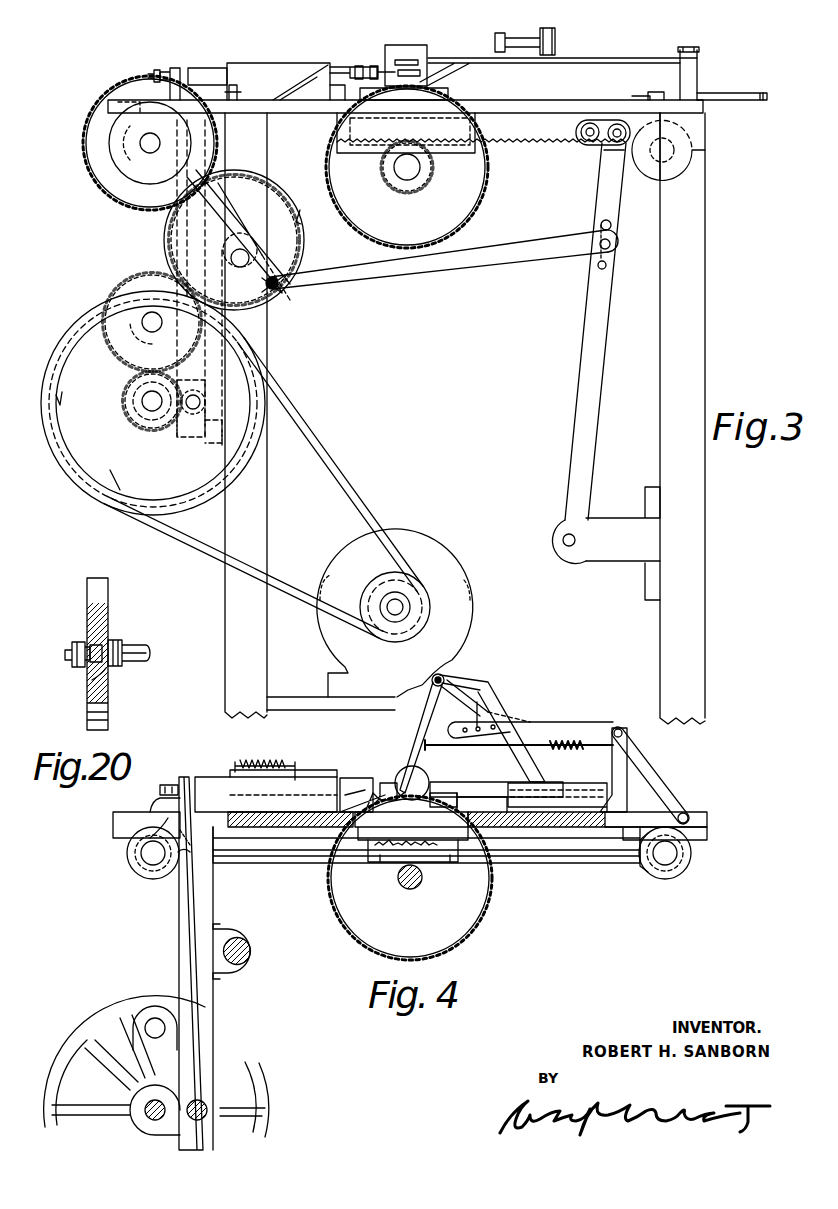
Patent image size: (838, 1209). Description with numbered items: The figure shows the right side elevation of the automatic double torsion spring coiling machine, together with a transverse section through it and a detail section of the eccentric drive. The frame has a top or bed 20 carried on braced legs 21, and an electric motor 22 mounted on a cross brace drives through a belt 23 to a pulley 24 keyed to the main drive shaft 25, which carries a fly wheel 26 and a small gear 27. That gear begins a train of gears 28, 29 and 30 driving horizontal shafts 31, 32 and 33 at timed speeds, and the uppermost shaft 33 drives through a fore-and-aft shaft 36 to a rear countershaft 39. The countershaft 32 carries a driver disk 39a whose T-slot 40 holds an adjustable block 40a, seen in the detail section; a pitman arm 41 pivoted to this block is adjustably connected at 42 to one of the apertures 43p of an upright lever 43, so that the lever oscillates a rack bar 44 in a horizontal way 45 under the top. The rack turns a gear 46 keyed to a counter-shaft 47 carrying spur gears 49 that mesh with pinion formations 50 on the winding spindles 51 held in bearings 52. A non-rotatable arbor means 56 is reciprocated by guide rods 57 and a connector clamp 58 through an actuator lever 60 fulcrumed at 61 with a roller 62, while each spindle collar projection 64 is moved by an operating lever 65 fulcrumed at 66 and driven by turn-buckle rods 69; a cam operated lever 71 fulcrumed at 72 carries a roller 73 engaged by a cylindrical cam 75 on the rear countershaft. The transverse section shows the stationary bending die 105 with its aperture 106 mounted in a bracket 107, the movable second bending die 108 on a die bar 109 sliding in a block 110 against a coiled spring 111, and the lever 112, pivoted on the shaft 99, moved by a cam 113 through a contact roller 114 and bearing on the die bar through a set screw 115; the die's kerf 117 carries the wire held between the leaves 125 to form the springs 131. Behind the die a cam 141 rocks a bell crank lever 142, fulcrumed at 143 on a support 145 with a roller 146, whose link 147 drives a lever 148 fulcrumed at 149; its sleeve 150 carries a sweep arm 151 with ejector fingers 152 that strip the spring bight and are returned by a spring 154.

In FIG. 3, the top or bed 20 is at (704, 112).
In FIG. 4, the top or bed 20 is at (708, 812).
In FIG. 3, the legs 21 is at (706, 282).
In FIG. 4, the legs 21 is at (209, 889).
In FIG. 3, the electric motor 22 is at (474, 606).
In FIG. 3, the belt 23 is at (200, 560).
In FIG. 3, the pulley 24 is at (120, 507).
In FIG. 3, the main drive shaft 25 is at (145, 408).
In FIG. 4, the main drive shaft 25 is at (140, 1118).
In FIG. 3, the fly wheel 26 is at (153, 403).
In FIG. 4, the fly wheel 26 is at (82, 1030).
In FIG. 3, the small gear 27 is at (122, 392).
In FIG. 3, the gear 28 is at (110, 350).
In FIG. 3, the gear 29 is at (170, 222).
In FIG. 3, the gear 30 is at (100, 178).
In FIG. 3, the horizontal shaft 31 is at (142, 324).
In FIG. 4, the horizontal shaft 31 is at (155, 1018).
In FIG. 3, the countershaft 32 is at (242, 262).
In FIG. 20, the countershaft 32 is at (143, 645).
In FIG. 4, the countershaft 32 is at (250, 964).
In FIG. 3, the uppermost shaft 33 is at (140, 143).
In FIG. 4, the uppermost shaft 33 is at (148, 855).
In FIG. 4, the horizontal shaft 36 is at (275, 864).
In FIG. 3, the countershaft 39 is at (656, 162).
In FIG. 4, the countershaft 39 is at (680, 853).
In FIG. 3, the driver disk 39a is at (296, 222).
In FIG. 20, the driver disk 39a is at (106, 690).
In FIG. 3, the T-slot 40 is at (208, 194).
In FIG. 20, the T-slot 40 is at (88, 688).
In FIG. 3, the block 40a is at (276, 290).
In FIG. 20, the block 40a is at (102, 648).
In FIG. 3, the pitman arm 41 is at (430, 276).
In FIG. 20, the pitman arm 41 is at (80, 642).
In FIG. 3, the adjustable connection 42 is at (612, 225).
In FIG. 3, the upright lever 43 is at (594, 370).
In FIG. 3, the apertures 43p is at (606, 265).
In FIG. 3, the rack bar 44 is at (522, 148).
In FIG. 3, the horizontal way 45 is at (470, 154).
In FIG. 3, the gear 46 is at (425, 178).
In FIG. 3, the counter-shaft 47 is at (402, 172).
In FIG. 4, the counter-shaft 47 is at (414, 889).
In FIG. 3, the spur gears 49 is at (330, 158).
In FIG. 4, the spur gears 49 is at (490, 890).
In FIG. 3, the pinion formations 50 is at (410, 76).
In FIG. 4, the winding spindles 51 is at (412, 814).
In FIG. 4, the bearings 52 is at (385, 808).
In FIG. 3, the arbor means 56 is at (414, 68).
In FIG. 3, the guide rods 57 is at (352, 67).
In FIG. 3, the connector clamp 58 is at (391, 44).
In FIG. 3, the actuator lever 60 is at (266, 70).
In FIG. 3, the fulcrum 61 is at (236, 85).
In FIG. 3, the roller 62 is at (127, 102).
In FIG. 3, the radial projection 64 is at (408, 58).
In FIG. 3, the operating lever 65 is at (594, 58).
In FIG. 3, the fulcrum 66 is at (687, 46).
In FIG. 3, the turn-buckle rods 69 is at (534, 30).
In FIG. 3, the cam operated lever 71 is at (730, 92).
In FIG. 3, the fulcrum 72 is at (761, 92).
In FIG. 3, the roller 73 is at (657, 92).
In FIG. 3, the cylindrical cam 75 is at (640, 96).
In FIG. 3, the shaft 99 is at (200, 400).
In FIG. 4, the shaft 99 is at (207, 1107).
In FIG. 4, the stationary bending die 105 is at (478, 782).
In FIG. 4, the aperture 106 is at (422, 777).
In FIG. 4, the bracket 107 is at (598, 783).
In FIG. 4, the movable second bending die 108 is at (360, 778).
In FIG. 3, the die bar 109 is at (210, 68).
In FIG. 4, the die bar 109 is at (212, 777).
In FIG. 3, the block 110 is at (300, 66).
In FIG. 4, the block 110 is at (315, 777).
In FIG. 4, the coiled spring 111 is at (268, 762).
In FIG. 3, the lever 112 is at (174, 68).
In FIG. 4, the lever 112 is at (180, 924).
In FIG. 4, the cam 113 is at (158, 810).
In FIG. 4, the contact roller 114 is at (182, 870).
In FIG. 3, the set screw 115 is at (155, 70).
In FIG. 4, the set screw 115 is at (162, 785).
In FIG. 4, the kerf 117 is at (380, 785).
In FIG. 4, the leaves 125 is at (345, 796).
In FIG. 4, the springs 131 is at (385, 862).
In FIG. 4, the cam 141 is at (700, 831).
In FIG. 4, the bell crank lever 142 is at (660, 772).
In FIG. 4, the fulcrum 143 is at (619, 729).
In FIG. 4, the support 145 is at (632, 770).
In FIG. 4, the roller 146 is at (690, 810).
In FIG. 4, the link 147 is at (478, 720).
In FIG. 4, the lever 148 is at (472, 680).
In FIG. 4, the fulcrum 149 is at (440, 674).
In FIG. 4, the sleeve 150 is at (432, 680).
In FIG. 4, the sweep arm 151 is at (425, 716).
In FIG. 4, the ejector fingers 152 is at (408, 782).
In FIG. 4, the spring 154 is at (566, 740).